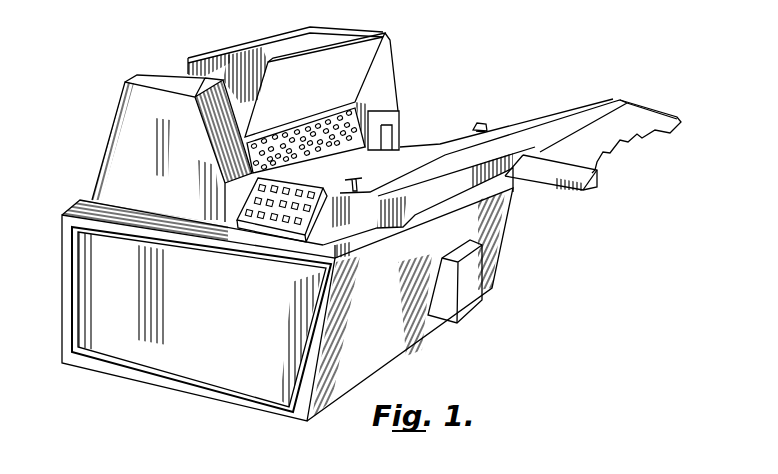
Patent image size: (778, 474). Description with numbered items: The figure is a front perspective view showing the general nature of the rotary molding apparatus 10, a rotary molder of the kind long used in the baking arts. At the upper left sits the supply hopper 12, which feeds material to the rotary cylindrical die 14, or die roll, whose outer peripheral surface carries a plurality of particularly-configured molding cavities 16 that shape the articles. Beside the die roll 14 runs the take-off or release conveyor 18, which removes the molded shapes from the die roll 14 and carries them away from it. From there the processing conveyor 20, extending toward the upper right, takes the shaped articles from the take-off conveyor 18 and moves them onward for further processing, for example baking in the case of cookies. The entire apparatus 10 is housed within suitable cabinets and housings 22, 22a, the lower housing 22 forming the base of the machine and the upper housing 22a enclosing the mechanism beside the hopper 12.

The rotary molding apparatus 10 is at (456, 86).
The supply hopper 12 is at (250, 55).
The rotary cylindrical die 14 is at (368, 116).
The molding cavities 16 is at (253, 150).
The take-off or release conveyor 18 is at (392, 160).
The processing conveyor 20 is at (618, 100).
The cabinets and housings 22 is at (186, 317).
The cabinets and housings 22a is at (168, 171).